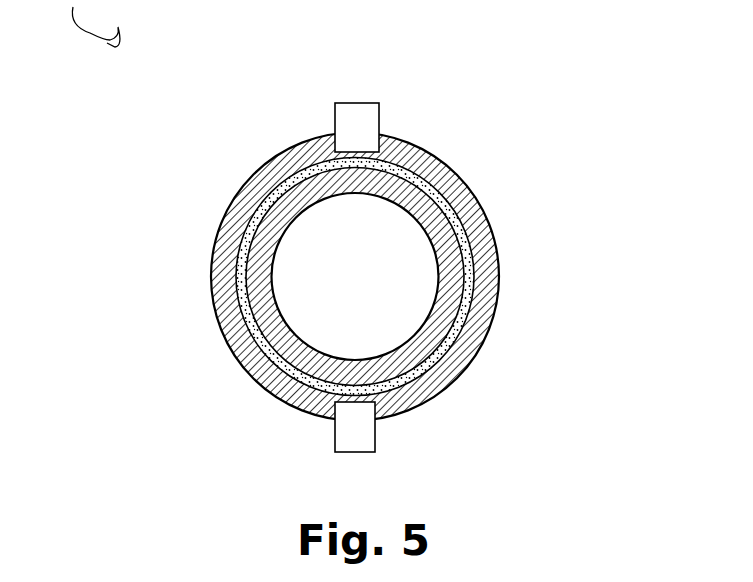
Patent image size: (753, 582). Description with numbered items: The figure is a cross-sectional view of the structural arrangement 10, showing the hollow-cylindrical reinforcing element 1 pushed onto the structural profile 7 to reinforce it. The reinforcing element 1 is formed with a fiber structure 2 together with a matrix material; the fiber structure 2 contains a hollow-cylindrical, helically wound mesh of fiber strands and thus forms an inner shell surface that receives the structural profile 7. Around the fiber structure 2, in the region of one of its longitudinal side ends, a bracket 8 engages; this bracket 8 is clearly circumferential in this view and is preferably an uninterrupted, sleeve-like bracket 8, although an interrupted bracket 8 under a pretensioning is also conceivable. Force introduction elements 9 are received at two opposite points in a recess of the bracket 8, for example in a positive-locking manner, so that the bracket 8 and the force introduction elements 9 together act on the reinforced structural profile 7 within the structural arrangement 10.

The reinforcing element 1 is at (489, 152).
The fiber structure 2 is at (502, 253).
The structural profile 7 is at (484, 208).
The bracket 8 is at (464, 373).
The force introduction elements 9 is at (355, 108).
The structural arrangement 10 is at (25, 578).